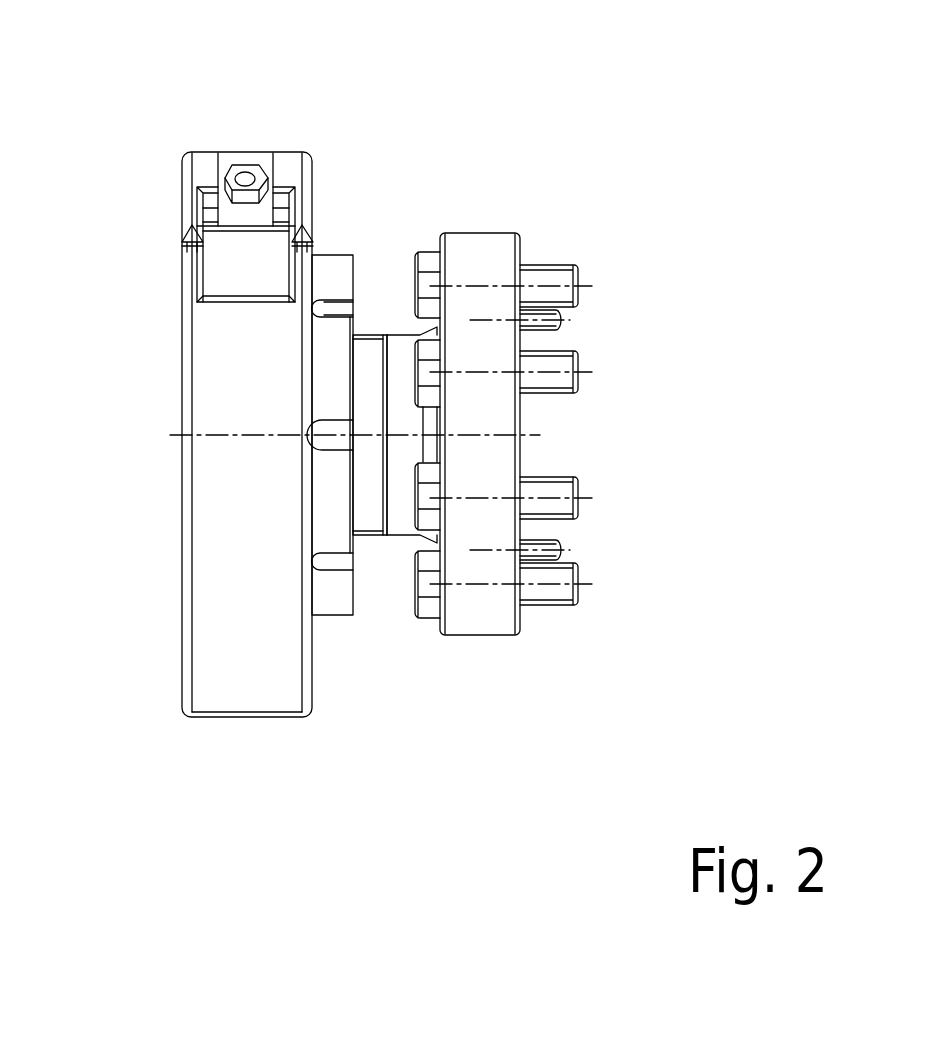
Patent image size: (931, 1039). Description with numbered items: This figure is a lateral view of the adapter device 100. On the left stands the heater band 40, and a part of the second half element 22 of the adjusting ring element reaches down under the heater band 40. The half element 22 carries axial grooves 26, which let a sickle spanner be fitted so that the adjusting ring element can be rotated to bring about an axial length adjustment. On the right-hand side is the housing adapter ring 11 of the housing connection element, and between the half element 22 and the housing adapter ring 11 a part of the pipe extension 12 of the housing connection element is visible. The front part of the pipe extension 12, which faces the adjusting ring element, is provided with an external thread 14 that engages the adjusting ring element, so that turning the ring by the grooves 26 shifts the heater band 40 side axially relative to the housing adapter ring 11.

The connection arrangement 100 is at (642, 138).
The housing adapter ring 11 is at (480, 603).
The pipe extension 12 is at (397, 532).
The external thread 14 is at (370, 505).
The second half element 22 is at (332, 277).
The axial grooves 26 is at (345, 313).
The heater band 40 is at (233, 357).